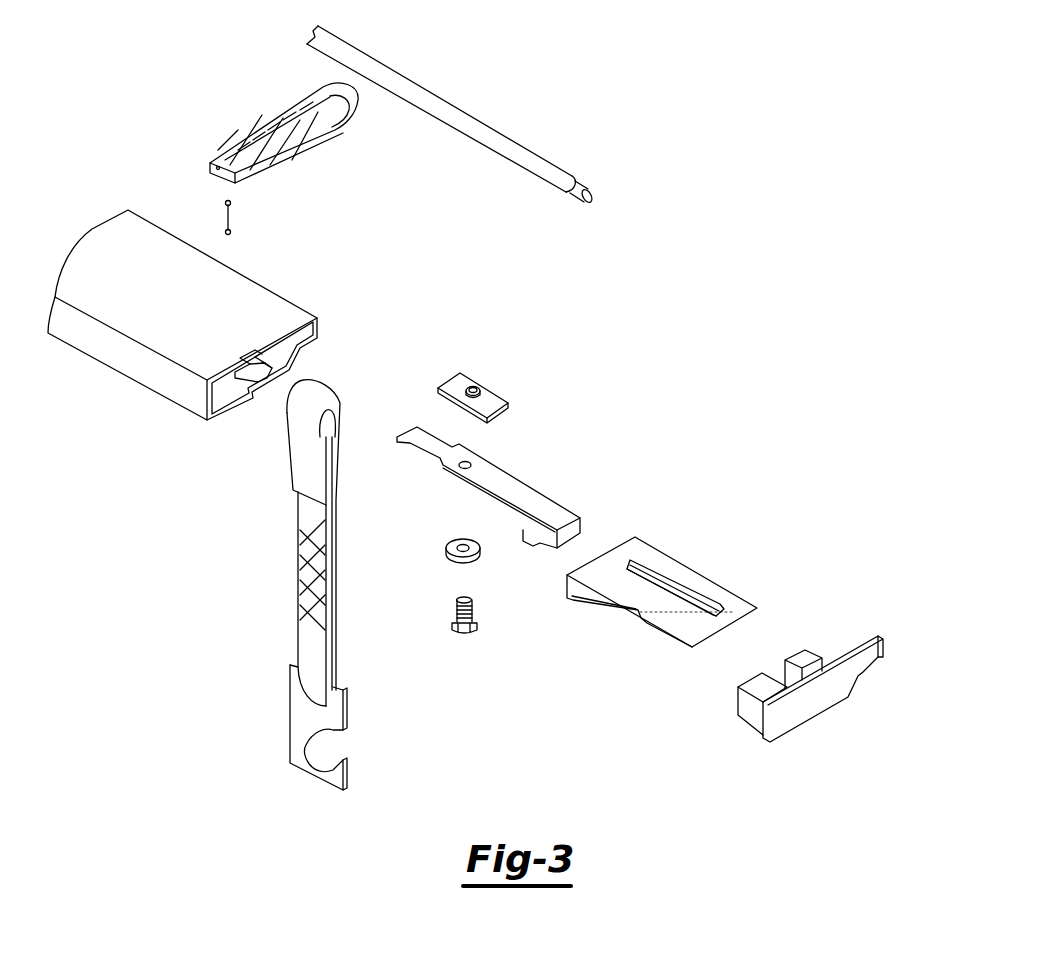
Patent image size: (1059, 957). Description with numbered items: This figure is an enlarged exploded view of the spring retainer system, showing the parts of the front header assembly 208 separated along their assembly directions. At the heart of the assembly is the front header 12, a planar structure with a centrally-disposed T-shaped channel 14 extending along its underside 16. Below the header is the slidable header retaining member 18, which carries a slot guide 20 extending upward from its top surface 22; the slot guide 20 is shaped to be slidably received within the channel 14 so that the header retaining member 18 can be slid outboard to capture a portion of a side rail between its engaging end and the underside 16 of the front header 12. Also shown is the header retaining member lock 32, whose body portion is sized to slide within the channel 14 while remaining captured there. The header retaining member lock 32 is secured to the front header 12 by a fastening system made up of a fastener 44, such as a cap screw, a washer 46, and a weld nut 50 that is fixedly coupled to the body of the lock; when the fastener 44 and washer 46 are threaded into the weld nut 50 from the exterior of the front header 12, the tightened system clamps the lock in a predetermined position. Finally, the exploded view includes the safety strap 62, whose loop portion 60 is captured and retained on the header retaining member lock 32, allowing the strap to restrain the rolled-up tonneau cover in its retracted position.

The front header assembly 208 is at (647, 90).
The front header 12 is at (246, 342).
The T-shaped channel 14 is at (257, 382).
The underside 16 is at (308, 352).
The loop portion 60 is at (324, 573).
The safety strap 62 is at (300, 558).
The weld nut 50 is at (492, 392).
The header retaining member lock 32 is at (515, 490).
The washer 46 is at (452, 553).
The fastener 44 is at (455, 615).
The header retaining member 18 is at (662, 596).
The slot guide 20 is at (657, 578).
The top surface 22 is at (695, 590).